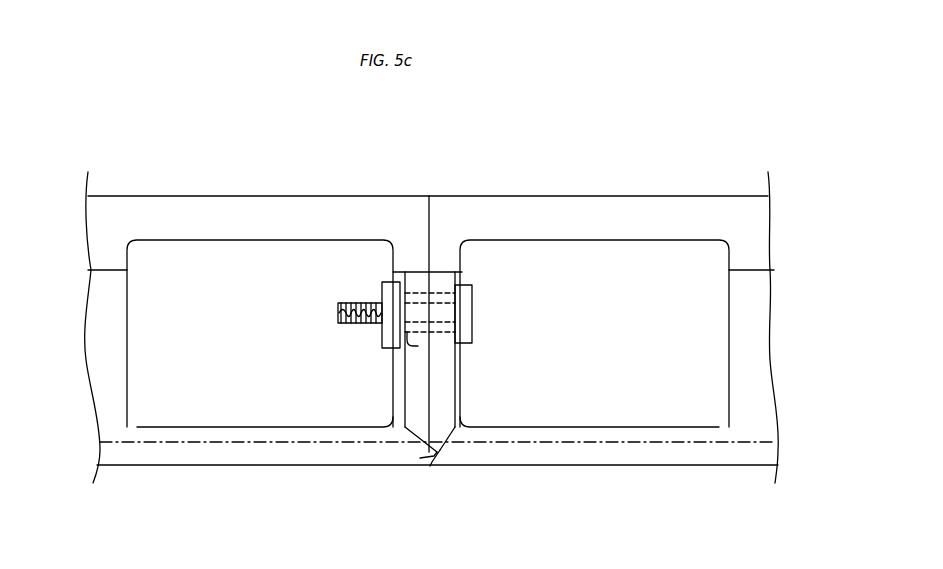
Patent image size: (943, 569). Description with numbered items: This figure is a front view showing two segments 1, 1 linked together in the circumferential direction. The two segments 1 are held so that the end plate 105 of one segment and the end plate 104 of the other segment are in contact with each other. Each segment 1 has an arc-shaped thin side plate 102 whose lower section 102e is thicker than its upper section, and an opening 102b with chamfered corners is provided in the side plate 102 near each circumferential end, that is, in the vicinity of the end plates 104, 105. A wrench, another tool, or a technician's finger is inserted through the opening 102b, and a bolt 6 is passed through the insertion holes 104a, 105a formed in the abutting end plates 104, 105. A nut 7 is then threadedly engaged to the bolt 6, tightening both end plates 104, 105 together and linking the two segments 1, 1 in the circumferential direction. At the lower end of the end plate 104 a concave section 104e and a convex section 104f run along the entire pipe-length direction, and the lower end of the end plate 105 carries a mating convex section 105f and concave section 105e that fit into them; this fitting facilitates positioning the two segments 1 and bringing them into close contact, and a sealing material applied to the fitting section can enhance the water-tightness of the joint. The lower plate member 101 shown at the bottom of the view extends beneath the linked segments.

The segment 1 is at (197, 185).
The side plate 102 is at (296, 195).
The opening 102b is at (270, 415).
The lower section 102e is at (110, 344).
The base plate 101 is at (210, 455).
The end plate 104 is at (452, 267).
The end plate 105 is at (413, 275).
The insertion hole 104a is at (445, 332).
The insertion hole 105a is at (416, 346).
The concave section 104e is at (452, 440).
The convex section 104f is at (432, 466).
The convex section 105f is at (400, 426).
The concave section 105e is at (421, 458).
The nut 7 is at (380, 295).
The bolt 6 is at (471, 300).